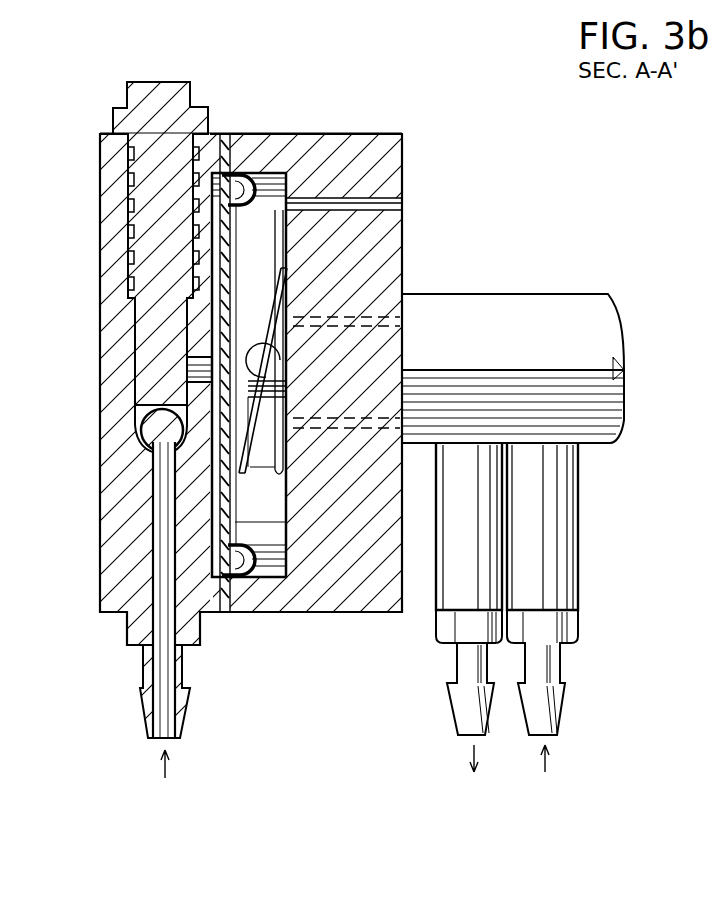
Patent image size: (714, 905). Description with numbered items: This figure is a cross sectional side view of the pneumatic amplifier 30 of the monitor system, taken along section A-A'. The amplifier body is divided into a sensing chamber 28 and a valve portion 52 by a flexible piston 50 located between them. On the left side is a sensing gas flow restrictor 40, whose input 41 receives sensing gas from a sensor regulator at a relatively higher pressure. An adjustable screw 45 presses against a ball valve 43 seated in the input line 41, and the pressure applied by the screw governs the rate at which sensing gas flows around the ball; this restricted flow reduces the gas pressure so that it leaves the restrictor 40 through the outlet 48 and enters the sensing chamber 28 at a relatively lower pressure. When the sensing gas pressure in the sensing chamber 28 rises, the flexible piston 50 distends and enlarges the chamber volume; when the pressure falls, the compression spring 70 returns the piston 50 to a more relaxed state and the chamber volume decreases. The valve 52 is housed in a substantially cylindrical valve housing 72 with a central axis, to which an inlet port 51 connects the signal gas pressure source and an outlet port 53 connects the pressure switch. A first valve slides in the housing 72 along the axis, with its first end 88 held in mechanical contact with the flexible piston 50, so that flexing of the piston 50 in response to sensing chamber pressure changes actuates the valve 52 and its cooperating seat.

The sensing chamber 28 is at (205, 615).
The pneumatic amplifier 30 is at (301, 446).
The sensing gas flow restrictor 40 is at (191, 60).
The input 41 is at (152, 725).
The ball valve 43 is at (157, 432).
The adjustable screw 45 is at (150, 205).
The outlet 48 is at (200, 375).
The flexible piston 50 is at (256, 560).
The inlet port 51 is at (560, 723).
The valve 52 is at (495, 205).
The outlet port 53 is at (467, 720).
The compression spring 70 is at (245, 272).
The valve housing 72 is at (596, 298).
The first end 88 is at (285, 357).